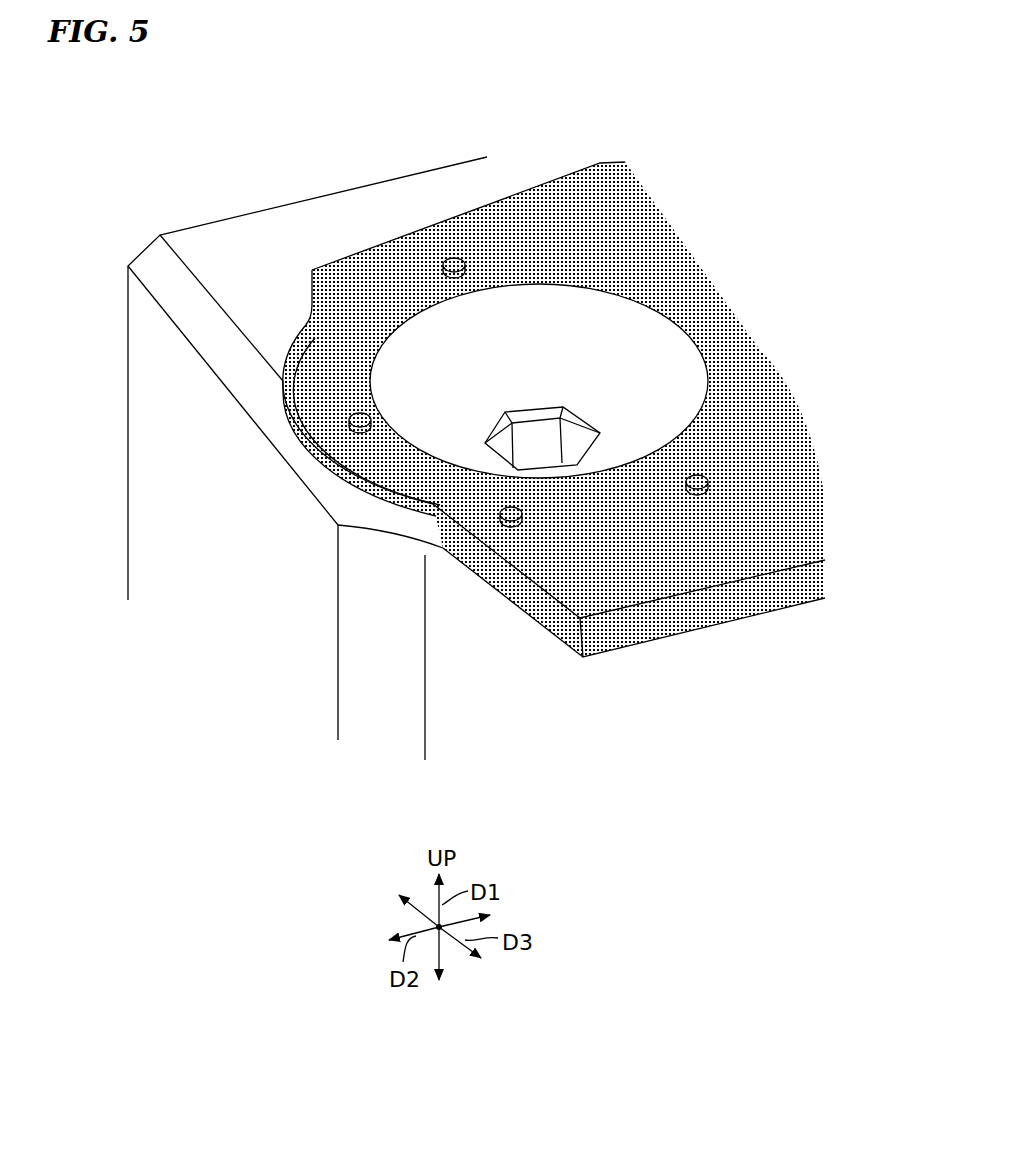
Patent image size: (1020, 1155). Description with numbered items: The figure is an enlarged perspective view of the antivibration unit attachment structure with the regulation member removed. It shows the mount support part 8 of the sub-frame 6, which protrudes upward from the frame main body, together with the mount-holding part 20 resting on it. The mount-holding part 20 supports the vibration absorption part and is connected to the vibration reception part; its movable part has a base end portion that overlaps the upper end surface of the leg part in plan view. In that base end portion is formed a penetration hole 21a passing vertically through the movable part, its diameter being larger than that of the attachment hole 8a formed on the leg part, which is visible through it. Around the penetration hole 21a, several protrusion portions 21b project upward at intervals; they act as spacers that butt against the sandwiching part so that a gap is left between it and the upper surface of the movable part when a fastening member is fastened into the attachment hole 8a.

The mount support part 8 is at (322, 194).
The sub-frame 6 is at (307, 434).
The attachment hole 8a is at (539, 444).
The mount-holding part 20 is at (574, 655).
The penetration hole 21a is at (687, 355).
The protrusion portion 21b is at (454, 260).